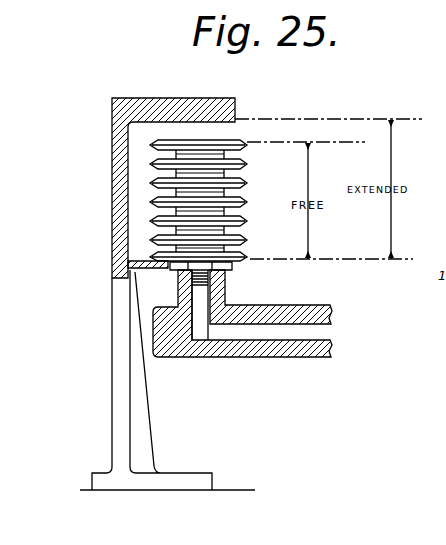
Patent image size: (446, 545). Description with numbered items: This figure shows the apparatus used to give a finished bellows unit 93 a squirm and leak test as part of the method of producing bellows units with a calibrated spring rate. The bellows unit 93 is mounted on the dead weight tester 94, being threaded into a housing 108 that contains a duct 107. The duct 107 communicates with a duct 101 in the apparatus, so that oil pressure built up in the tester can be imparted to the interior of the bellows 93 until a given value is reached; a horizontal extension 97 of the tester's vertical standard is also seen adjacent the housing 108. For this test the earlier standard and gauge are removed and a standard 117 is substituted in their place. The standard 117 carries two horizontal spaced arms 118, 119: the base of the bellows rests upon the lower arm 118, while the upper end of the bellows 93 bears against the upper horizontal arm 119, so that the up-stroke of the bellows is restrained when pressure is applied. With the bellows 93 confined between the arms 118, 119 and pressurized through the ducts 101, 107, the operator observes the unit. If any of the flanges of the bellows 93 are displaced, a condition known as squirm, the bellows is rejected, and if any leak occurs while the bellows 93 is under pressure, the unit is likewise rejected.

The upper horizontal arm 119 is at (152, 106).
The horizontal arm 118 is at (150, 267).
The bellows unit 93 is at (250, 183).
The housing 108 is at (224, 282).
The duct 107 is at (201, 305).
The dead weight tester 94 is at (297, 363).
The duct 101 is at (318, 305).
The horizontal extension 97 is at (307, 323).
The standard 117 is at (122, 403).